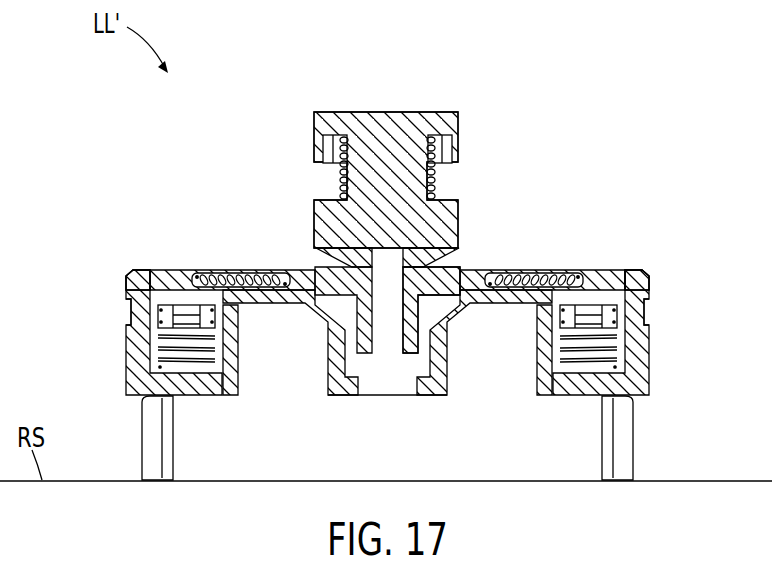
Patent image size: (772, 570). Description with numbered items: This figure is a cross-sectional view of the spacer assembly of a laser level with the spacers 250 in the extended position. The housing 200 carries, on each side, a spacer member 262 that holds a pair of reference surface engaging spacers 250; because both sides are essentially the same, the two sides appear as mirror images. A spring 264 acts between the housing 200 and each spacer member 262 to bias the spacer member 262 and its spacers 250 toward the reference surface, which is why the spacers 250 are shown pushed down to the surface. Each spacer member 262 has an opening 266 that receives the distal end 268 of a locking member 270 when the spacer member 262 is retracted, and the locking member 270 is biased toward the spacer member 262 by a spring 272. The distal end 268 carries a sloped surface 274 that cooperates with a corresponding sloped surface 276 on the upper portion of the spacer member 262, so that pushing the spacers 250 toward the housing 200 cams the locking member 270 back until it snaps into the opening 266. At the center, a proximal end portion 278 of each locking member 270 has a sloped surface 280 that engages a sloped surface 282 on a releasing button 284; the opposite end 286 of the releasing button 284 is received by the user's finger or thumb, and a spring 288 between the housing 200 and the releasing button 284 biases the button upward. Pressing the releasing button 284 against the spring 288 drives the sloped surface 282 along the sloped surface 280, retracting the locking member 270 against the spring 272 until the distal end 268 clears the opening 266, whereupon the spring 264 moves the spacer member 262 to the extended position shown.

The housing 200 is at (533, 390).
The spacers 250 is at (150, 460).
The spacer member 262 is at (127, 347).
The spring 264 is at (145, 360).
The opening 266 is at (142, 320).
The distal end 268 is at (133, 263).
The locking member 270 is at (178, 270).
The spring 272 is at (233, 280).
The sloped surface 274 is at (140, 278).
The sloped surface 276 is at (125, 285).
The proximal end portion 278 is at (472, 257).
The sloped surface 280 is at (368, 250).
The sloped surface 282 is at (435, 240).
The releasing button 284 is at (293, 113).
The opposite end 286 is at (378, 112).
The spring 288 is at (340, 175).